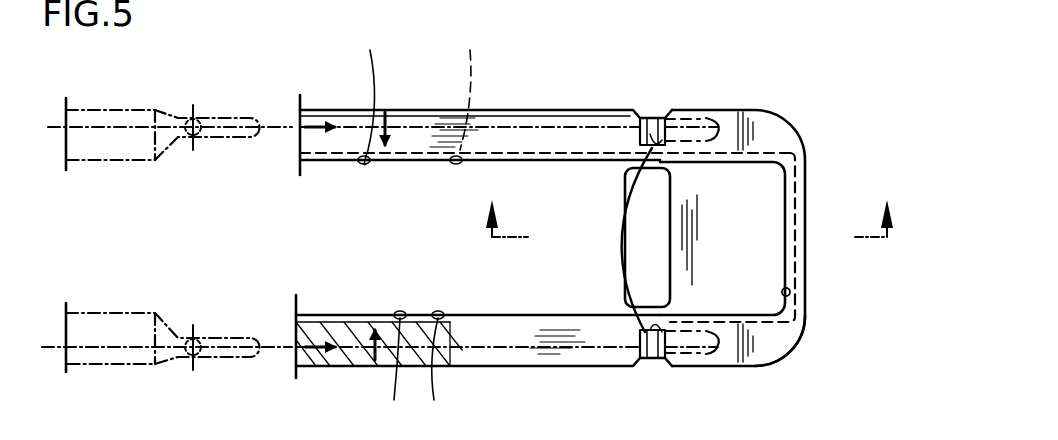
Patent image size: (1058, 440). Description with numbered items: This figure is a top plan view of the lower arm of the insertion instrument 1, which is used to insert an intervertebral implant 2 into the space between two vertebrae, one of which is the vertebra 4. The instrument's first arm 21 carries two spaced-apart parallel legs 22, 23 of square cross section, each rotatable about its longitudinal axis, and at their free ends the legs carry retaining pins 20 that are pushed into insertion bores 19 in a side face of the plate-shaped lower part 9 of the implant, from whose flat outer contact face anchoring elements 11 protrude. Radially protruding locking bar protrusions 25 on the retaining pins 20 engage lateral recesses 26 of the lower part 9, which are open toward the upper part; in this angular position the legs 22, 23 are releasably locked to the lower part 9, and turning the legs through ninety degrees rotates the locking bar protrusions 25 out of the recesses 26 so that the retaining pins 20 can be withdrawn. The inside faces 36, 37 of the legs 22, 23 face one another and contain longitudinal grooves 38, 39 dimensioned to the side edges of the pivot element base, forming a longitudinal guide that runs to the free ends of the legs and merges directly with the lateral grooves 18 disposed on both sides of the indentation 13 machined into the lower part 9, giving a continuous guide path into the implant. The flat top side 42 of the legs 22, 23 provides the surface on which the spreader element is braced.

The insertion instrument 1 is at (165, 84).
The intervertebral implant 2 is at (803, 106).
The vertebra 4 is at (683, 236).
The lower part 9 is at (808, 336).
The anchoring elements 11 is at (814, 0).
The indentation 13 is at (752, 222).
The lateral grooves 18 is at (791, 293).
The insertion bores 19 is at (706, 118).
The retaining pins 20 is at (240, 118).
The first arm 21 is at (518, 100).
The leg 22 is at (494, 358).
The leg 23 is at (412, 113).
The locking bar protrusions 25 is at (195, 115).
The lateral recesses 26 is at (642, 170).
The inside face 36 is at (357, 93).
The inside face 37 is at (419, 371).
The longitudinal groove 38 is at (455, 93).
The longitudinal groove 39 is at (392, 325).
The flat top side 42 is at (566, 120).